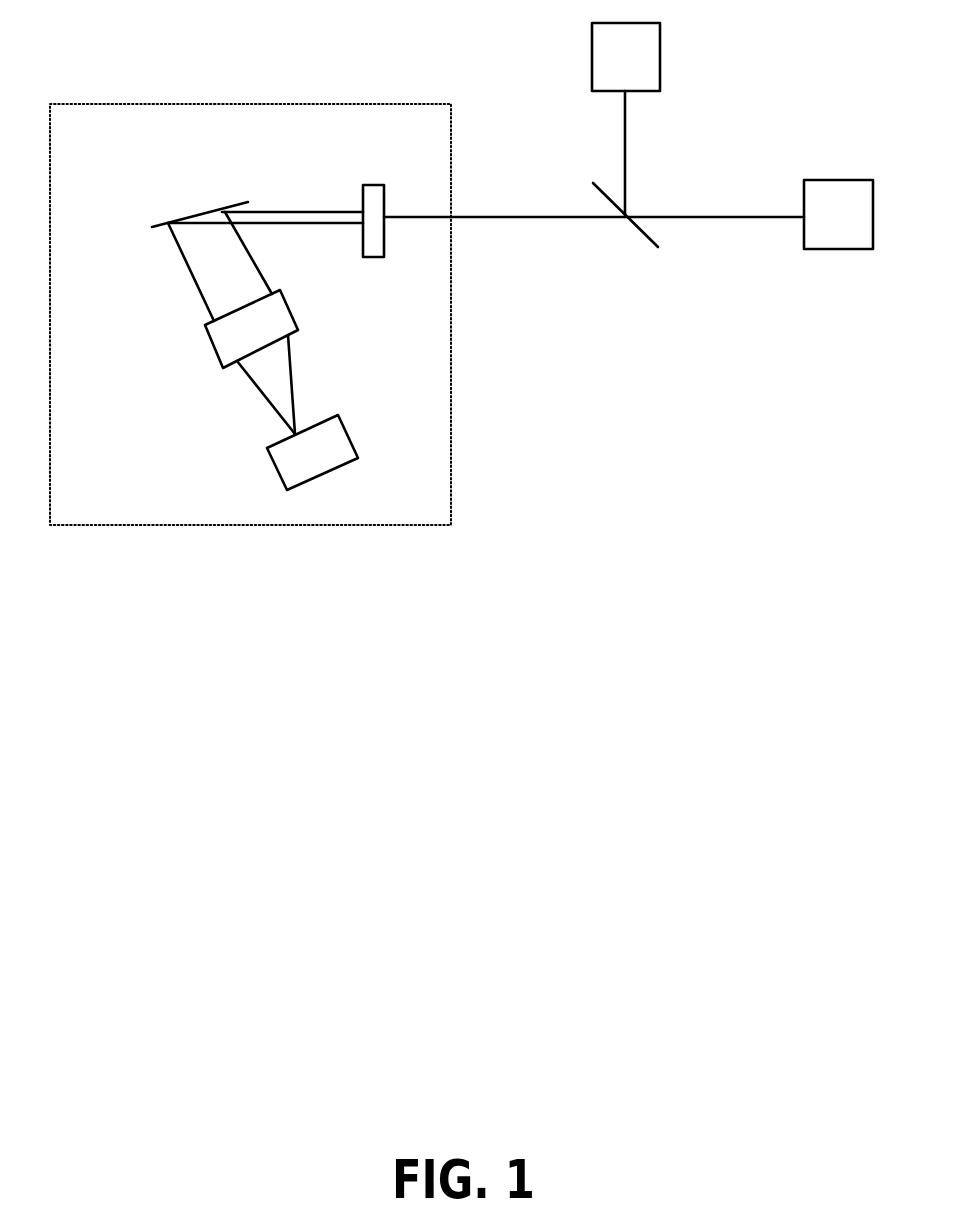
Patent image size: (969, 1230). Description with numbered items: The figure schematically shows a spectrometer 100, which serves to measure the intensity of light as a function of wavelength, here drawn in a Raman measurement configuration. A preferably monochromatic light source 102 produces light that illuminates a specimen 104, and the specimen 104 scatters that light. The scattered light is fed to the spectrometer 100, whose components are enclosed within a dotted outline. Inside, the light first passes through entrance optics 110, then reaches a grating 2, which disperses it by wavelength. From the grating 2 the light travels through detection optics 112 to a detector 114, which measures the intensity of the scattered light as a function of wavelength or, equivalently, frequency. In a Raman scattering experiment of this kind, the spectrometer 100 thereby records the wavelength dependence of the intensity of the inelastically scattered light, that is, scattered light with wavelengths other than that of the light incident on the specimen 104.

The grating 2 is at (180, 220).
The spectrometer 100 is at (451, 437).
The light source 102 is at (660, 63).
The specimen 104 is at (845, 249).
The entrance optics 110 is at (363, 203).
The detection optics 112 is at (219, 365).
The detector 114 is at (278, 477).